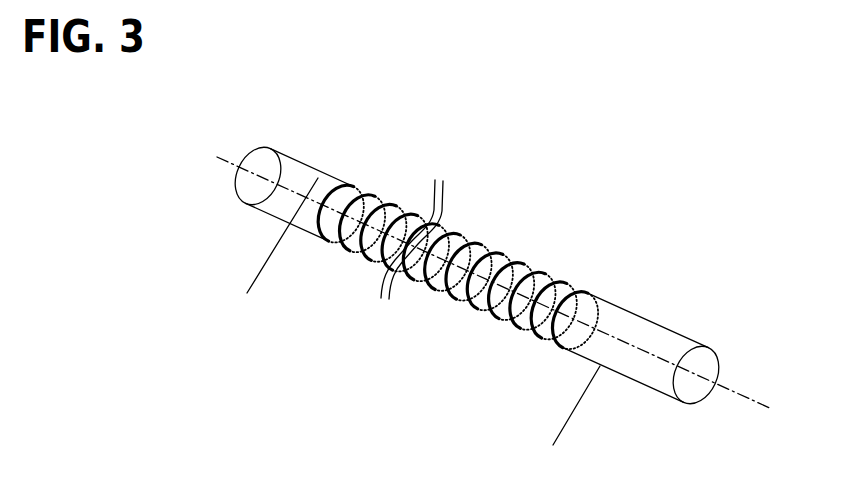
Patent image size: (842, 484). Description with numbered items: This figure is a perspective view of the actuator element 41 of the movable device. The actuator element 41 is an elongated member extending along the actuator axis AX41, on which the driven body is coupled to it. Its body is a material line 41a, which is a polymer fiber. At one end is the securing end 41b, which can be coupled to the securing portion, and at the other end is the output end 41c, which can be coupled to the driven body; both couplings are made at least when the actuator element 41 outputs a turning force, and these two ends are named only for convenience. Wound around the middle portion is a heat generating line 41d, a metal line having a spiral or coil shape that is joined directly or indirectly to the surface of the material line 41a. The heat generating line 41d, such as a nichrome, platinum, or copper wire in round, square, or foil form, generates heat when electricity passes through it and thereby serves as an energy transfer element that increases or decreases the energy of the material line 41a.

The actuator element 41 is at (503, 286).
The material line 41a is at (627, 303).
The securing end 41b is at (718, 353).
The output end 41c is at (278, 150).
The heat generating line 41d is at (513, 258).
The actuator axis AX41 is at (265, 202).